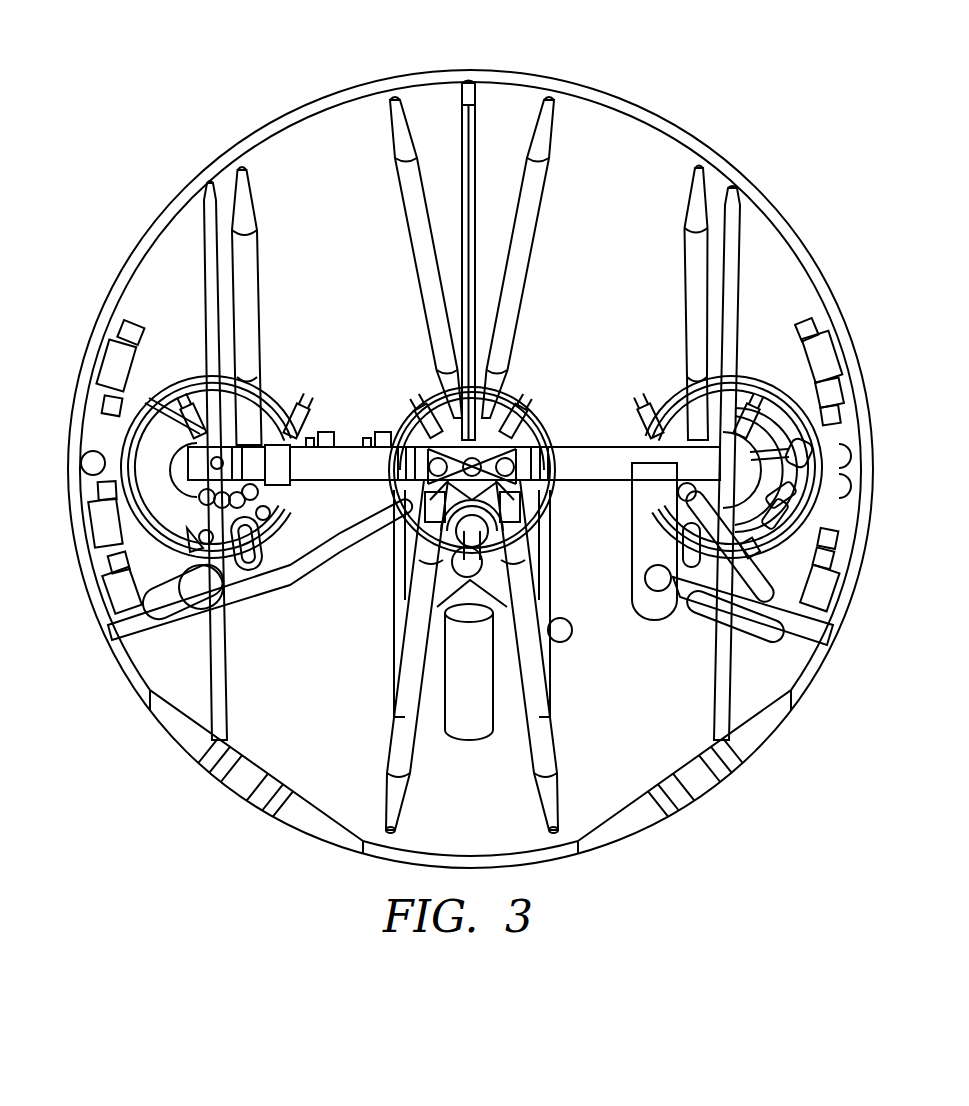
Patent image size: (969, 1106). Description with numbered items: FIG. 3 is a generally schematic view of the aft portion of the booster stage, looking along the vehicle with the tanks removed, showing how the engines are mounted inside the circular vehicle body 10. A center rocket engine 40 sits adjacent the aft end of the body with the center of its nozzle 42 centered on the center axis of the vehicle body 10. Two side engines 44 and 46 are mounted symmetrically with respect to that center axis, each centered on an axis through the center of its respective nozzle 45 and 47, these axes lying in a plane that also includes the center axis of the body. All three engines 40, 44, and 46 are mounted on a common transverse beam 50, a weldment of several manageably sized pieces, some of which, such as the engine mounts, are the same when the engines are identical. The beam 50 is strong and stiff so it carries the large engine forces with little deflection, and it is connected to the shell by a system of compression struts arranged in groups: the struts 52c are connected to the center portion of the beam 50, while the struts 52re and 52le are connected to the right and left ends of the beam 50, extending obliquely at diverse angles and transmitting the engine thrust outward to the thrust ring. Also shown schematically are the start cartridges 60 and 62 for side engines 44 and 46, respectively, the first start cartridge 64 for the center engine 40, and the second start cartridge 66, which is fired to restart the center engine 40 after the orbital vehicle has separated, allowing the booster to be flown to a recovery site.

The vehicle body 10 is at (160, 199).
The center rocket engine 40 is at (527, 374).
The nozzle 42 is at (547, 417).
The side engine 44 is at (757, 370).
The nozzle 45 is at (787, 393).
The side engine 46 is at (123, 534).
The nozzle 47 is at (182, 378).
The transverse beam 50 is at (347, 437).
The compression struts 52le is at (258, 263).
The compression struts 52c is at (525, 120).
The compression struts 52re is at (683, 263).
The start cartridge 60 is at (773, 473).
The start cartridge 62 is at (180, 470).
The start cartridge #1 64 is at (400, 560).
The start cartridge #2 66 is at (520, 540).